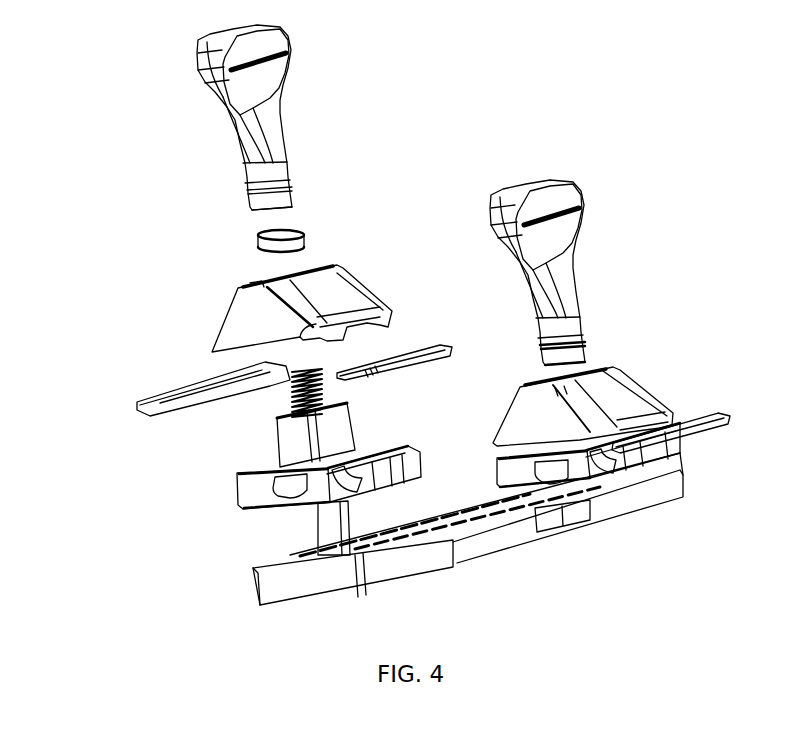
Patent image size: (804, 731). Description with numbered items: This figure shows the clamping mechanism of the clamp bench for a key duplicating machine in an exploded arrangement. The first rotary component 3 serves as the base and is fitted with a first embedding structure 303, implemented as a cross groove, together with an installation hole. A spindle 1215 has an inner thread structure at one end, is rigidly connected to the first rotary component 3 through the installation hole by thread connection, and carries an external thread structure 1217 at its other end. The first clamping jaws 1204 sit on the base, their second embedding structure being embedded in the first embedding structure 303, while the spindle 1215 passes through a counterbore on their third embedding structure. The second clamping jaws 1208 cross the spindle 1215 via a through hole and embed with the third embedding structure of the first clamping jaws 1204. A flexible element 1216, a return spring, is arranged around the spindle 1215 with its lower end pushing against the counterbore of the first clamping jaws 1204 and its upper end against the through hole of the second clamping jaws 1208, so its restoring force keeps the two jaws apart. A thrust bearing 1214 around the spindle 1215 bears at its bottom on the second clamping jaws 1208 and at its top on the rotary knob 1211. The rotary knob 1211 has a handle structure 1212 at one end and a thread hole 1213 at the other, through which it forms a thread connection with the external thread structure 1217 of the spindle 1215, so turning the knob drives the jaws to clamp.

The rotary knob 1211 is at (200, 137).
The handle structure 1212 is at (270, 64).
The thread hole 1213 is at (288, 200).
The thrust bearing 1214 is at (250, 248).
The second clamping jaws 1208 is at (240, 308).
The flexible element 1216 is at (290, 381).
The external thread structure 1217 is at (327, 402).
The first clamping jaws 1204 is at (250, 492).
The spindle 1215 is at (313, 526).
The first rotary component 3 is at (265, 588).
The first embedding structure 303 is at (322, 562).